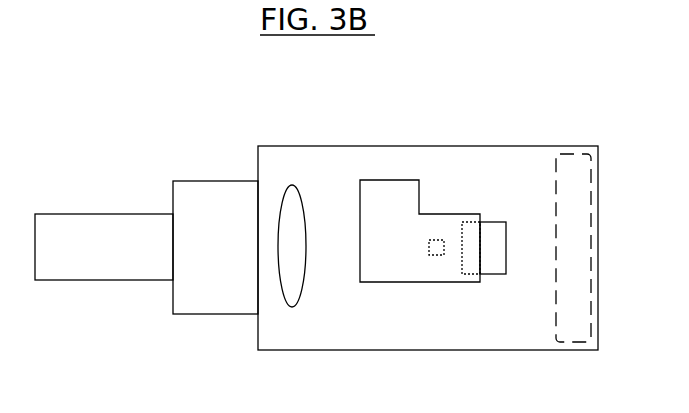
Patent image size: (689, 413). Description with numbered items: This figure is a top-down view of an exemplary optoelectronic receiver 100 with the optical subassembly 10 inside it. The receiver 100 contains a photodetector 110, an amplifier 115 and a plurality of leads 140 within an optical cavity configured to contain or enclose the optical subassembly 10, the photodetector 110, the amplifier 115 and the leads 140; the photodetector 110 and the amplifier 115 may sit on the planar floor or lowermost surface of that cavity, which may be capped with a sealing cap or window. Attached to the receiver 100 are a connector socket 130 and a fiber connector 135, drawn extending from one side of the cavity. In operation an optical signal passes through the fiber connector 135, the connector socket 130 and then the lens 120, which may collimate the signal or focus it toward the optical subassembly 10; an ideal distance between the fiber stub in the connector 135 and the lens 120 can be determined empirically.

The optoelectronic receiver 100 is at (189, 110).
The optical subassembly 10 is at (390, 180).
The photodetector 110 is at (437, 256).
The amplifier 115 is at (490, 274).
The lens 120 is at (294, 185).
The connector socket 130 is at (215, 316).
The fiber connector 135 is at (98, 282).
The leads 140 is at (574, 155).